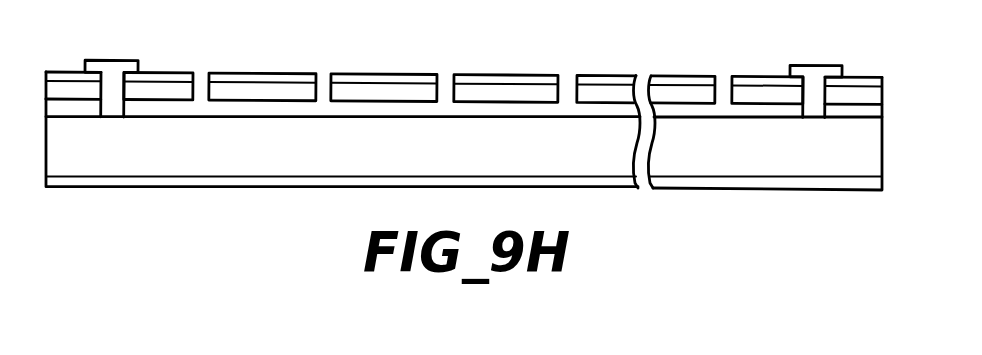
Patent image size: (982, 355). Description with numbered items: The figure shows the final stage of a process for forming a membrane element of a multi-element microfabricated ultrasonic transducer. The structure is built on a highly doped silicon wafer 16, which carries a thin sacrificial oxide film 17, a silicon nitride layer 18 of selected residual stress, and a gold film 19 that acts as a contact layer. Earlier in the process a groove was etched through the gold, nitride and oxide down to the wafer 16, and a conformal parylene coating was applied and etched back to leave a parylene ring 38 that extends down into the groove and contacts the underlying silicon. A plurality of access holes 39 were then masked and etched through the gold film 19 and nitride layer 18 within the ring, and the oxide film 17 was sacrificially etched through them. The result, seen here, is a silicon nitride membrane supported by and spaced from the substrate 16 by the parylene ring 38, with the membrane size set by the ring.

The silicon wafer 16 is at (465, 152).
The oxide film 17 is at (850, 110).
The silicon nitride layer 18 is at (599, 90).
The gold film 19 is at (291, 183).
The parylene ring 38 is at (108, 60).
The access holes 39 is at (202, 85).